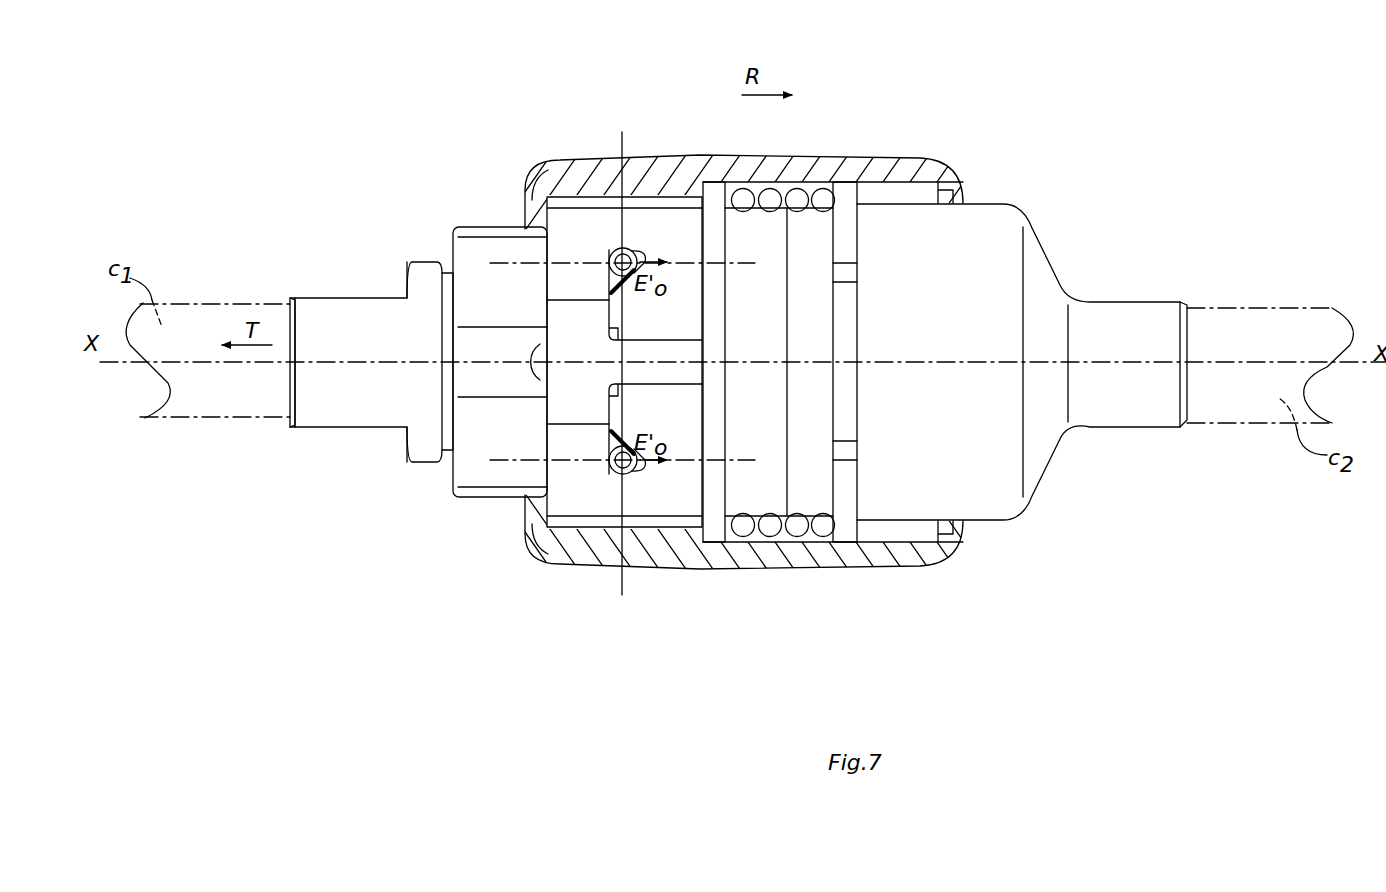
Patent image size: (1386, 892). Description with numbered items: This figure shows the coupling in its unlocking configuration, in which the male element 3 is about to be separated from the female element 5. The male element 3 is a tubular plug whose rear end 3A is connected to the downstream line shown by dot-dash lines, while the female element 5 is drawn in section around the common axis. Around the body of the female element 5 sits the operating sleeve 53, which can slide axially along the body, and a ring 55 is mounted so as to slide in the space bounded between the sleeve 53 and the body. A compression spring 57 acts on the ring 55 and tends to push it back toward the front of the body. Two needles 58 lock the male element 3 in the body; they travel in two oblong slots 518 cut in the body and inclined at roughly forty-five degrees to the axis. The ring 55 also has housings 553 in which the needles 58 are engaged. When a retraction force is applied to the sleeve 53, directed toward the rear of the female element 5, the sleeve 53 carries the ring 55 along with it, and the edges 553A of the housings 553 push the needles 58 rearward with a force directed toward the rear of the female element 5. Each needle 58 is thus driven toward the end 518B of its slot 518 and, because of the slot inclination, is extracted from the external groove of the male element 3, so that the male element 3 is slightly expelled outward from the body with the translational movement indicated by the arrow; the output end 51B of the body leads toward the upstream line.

The male element 3 is at (373, 280).
The rear end of the male element 3A is at (290, 390).
The female element 5 is at (863, 152).
The output shaft end 51B is at (1190, 352).
The operating sleeve 53 is at (553, 178).
The ring 55 is at (565, 497).
The compression spring 57 is at (783, 530).
The needles 58 is at (620, 474).
The oblong slots 518 is at (607, 482).
The end of the slot 518B is at (608, 248).
The housings 553 is at (700, 277).
The edges of the housings 553A is at (610, 312).